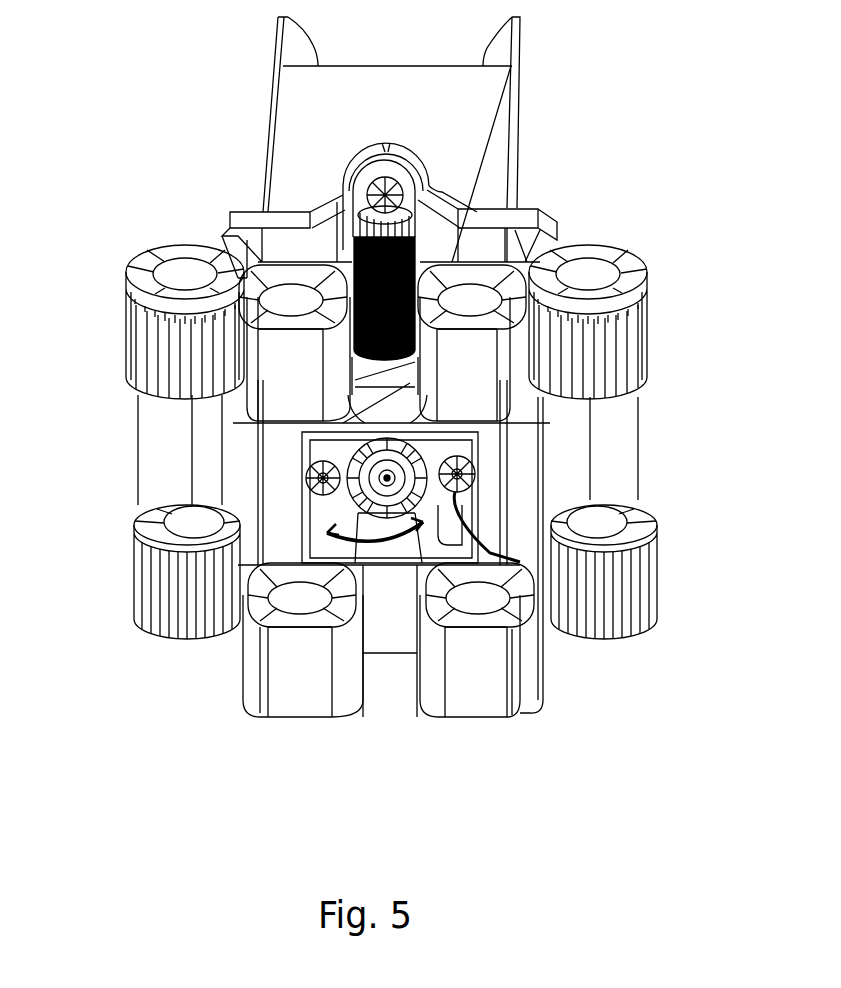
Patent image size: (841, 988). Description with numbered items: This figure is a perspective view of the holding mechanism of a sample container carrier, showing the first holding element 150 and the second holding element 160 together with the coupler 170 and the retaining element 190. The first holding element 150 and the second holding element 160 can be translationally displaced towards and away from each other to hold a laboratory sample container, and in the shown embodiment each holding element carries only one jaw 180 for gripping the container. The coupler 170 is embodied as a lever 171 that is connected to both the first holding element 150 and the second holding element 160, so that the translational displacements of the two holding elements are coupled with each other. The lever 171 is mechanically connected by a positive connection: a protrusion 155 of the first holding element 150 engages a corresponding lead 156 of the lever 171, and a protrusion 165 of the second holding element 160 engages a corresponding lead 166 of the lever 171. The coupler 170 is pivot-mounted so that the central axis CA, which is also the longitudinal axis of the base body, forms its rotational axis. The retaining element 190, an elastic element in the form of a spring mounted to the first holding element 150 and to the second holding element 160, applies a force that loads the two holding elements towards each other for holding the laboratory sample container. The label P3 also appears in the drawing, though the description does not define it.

The jaw 180 is at (520, 82).
The second holding element 160 is at (518, 126).
The retaining element 190 is at (420, 257).
The first holding element 150 is at (540, 698).
The lever 171 is at (463, 457).
The coupler 170 is at (476, 478).
The lead 166 is at (475, 505).
The protrusion 165 is at (520, 562).
The protrusion 155 is at (340, 458).
The lead 156 is at (322, 495).
The central axis CA is at (386, 477).
The position P3 is at (382, 522).